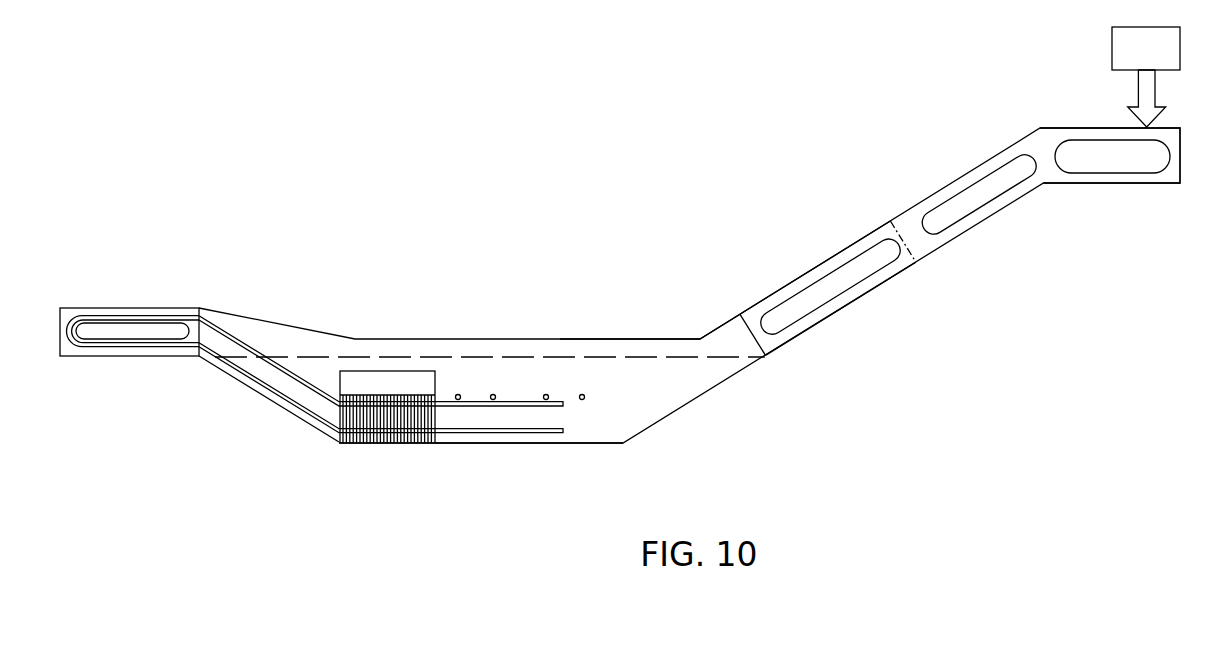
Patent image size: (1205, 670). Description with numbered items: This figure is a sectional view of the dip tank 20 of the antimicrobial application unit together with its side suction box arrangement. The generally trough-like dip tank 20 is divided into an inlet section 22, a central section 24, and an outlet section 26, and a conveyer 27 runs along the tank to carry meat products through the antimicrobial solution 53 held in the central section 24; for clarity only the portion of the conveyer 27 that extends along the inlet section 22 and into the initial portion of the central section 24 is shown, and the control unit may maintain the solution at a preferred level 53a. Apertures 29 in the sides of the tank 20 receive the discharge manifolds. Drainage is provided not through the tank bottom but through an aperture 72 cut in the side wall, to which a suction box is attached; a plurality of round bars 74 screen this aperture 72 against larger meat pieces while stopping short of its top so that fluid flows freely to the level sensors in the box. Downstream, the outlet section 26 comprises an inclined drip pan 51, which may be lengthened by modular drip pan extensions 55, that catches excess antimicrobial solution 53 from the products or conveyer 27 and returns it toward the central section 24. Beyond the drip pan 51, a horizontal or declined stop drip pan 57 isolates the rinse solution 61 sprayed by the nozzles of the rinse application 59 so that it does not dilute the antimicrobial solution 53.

The dip tank 20 is at (582, 375).
The inlet section 22 is at (201, 362).
The central section 24 is at (593, 430).
The outlet section 26 is at (769, 361).
The conveyer 27 is at (272, 372).
The apertures 29 is at (546, 394).
The drip pan 51 is at (874, 236).
The antimicrobial solution 53 is at (625, 372).
The preferred level 53a is at (679, 358).
The modular drip pan extensions 55 is at (855, 302).
The stop drip pan 57 is at (1040, 162).
The rinse application 59 is at (1135, 58).
The rinse solution 61 is at (1138, 87).
The aperture 72 is at (383, 378).
The round bars 74 is at (422, 443).